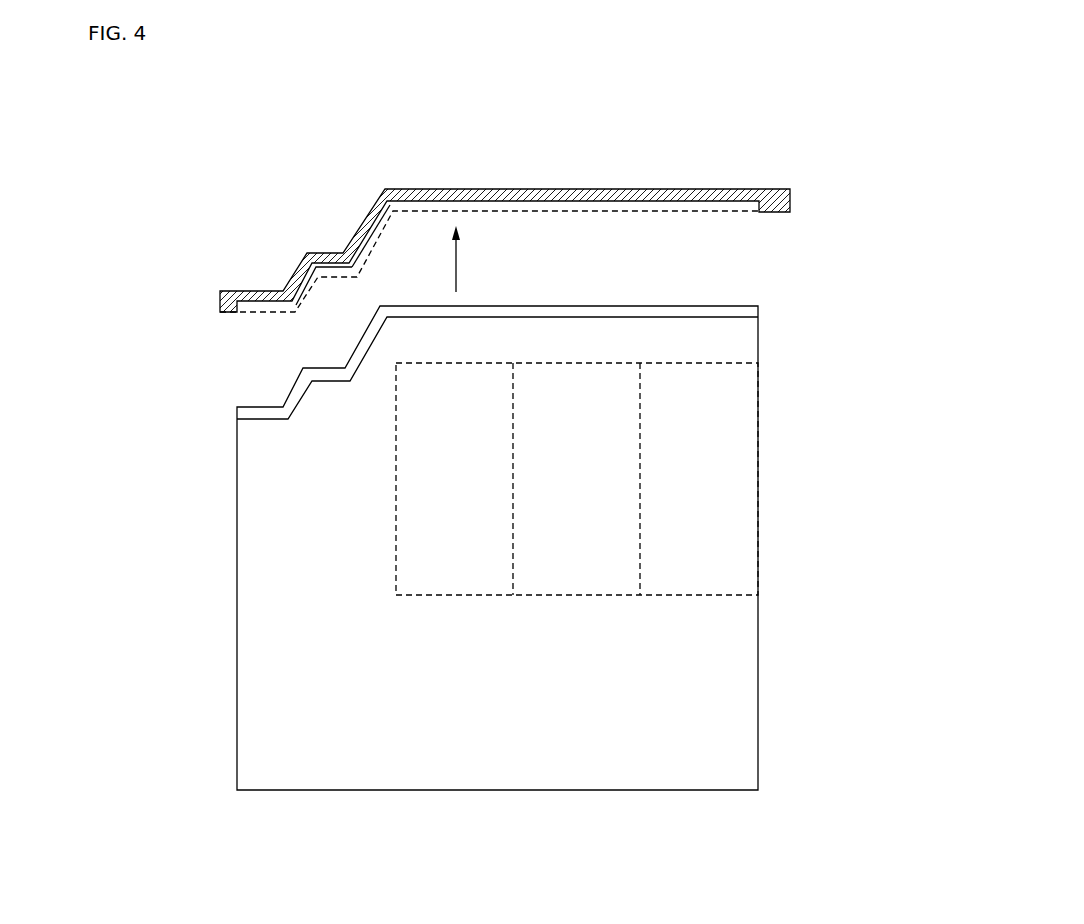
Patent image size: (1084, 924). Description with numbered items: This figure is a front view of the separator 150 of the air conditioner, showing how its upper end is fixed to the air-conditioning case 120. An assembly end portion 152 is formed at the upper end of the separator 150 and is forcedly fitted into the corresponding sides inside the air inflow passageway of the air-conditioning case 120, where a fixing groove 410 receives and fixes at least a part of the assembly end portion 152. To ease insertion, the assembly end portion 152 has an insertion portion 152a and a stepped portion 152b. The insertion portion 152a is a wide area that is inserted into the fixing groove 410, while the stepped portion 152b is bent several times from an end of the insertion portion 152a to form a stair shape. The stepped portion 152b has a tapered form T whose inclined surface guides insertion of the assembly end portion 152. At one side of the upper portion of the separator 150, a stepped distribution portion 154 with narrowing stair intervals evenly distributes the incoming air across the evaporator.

The air-conditioning case 120 is at (568, 188).
The fixing groove 410 is at (505, 188).
The assembly end portion 152 is at (348, 196).
The insertion portion 152a is at (423, 275).
The stepped portion 152b is at (354, 313).
The separator 150 is at (774, 672).
The stepped distribution portion 154 is at (710, 482).
The tapered form T is at (352, 353).